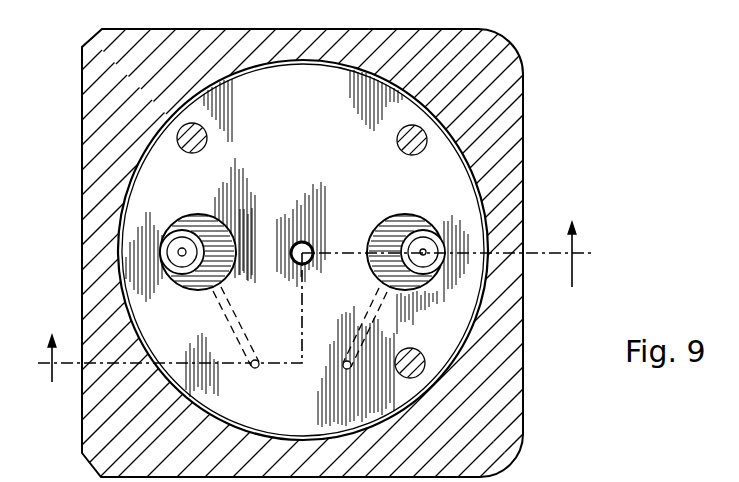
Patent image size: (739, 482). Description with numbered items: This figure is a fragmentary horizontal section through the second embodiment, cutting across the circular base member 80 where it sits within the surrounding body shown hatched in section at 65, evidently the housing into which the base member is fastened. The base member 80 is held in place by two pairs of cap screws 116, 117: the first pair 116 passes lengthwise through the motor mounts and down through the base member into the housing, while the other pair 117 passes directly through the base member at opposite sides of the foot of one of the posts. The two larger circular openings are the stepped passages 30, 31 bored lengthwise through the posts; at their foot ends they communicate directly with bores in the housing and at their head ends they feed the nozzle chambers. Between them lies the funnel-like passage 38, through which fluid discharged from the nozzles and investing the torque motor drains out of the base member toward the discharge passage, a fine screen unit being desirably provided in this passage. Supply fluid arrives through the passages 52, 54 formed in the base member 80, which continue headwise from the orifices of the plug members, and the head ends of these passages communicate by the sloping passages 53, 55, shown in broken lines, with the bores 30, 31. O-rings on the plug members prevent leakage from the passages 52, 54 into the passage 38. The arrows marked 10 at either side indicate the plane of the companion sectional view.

The mounting plate 65 is at (497, 140).
The base member 80 is at (458, 208).
The cap screws 116 is at (183, 143).
The cap screws 117 is at (425, 357).
The stepped passage 30 is at (222, 268).
The stepped passage 31 is at (409, 222).
The funnel-like passage 38 is at (312, 247).
The passage 52 is at (257, 368).
The passage 54 is at (344, 367).
The sloping passage 53 is at (235, 321).
The sloping passage 55 is at (385, 288).
The section line 10- 10 is at (312, 307).